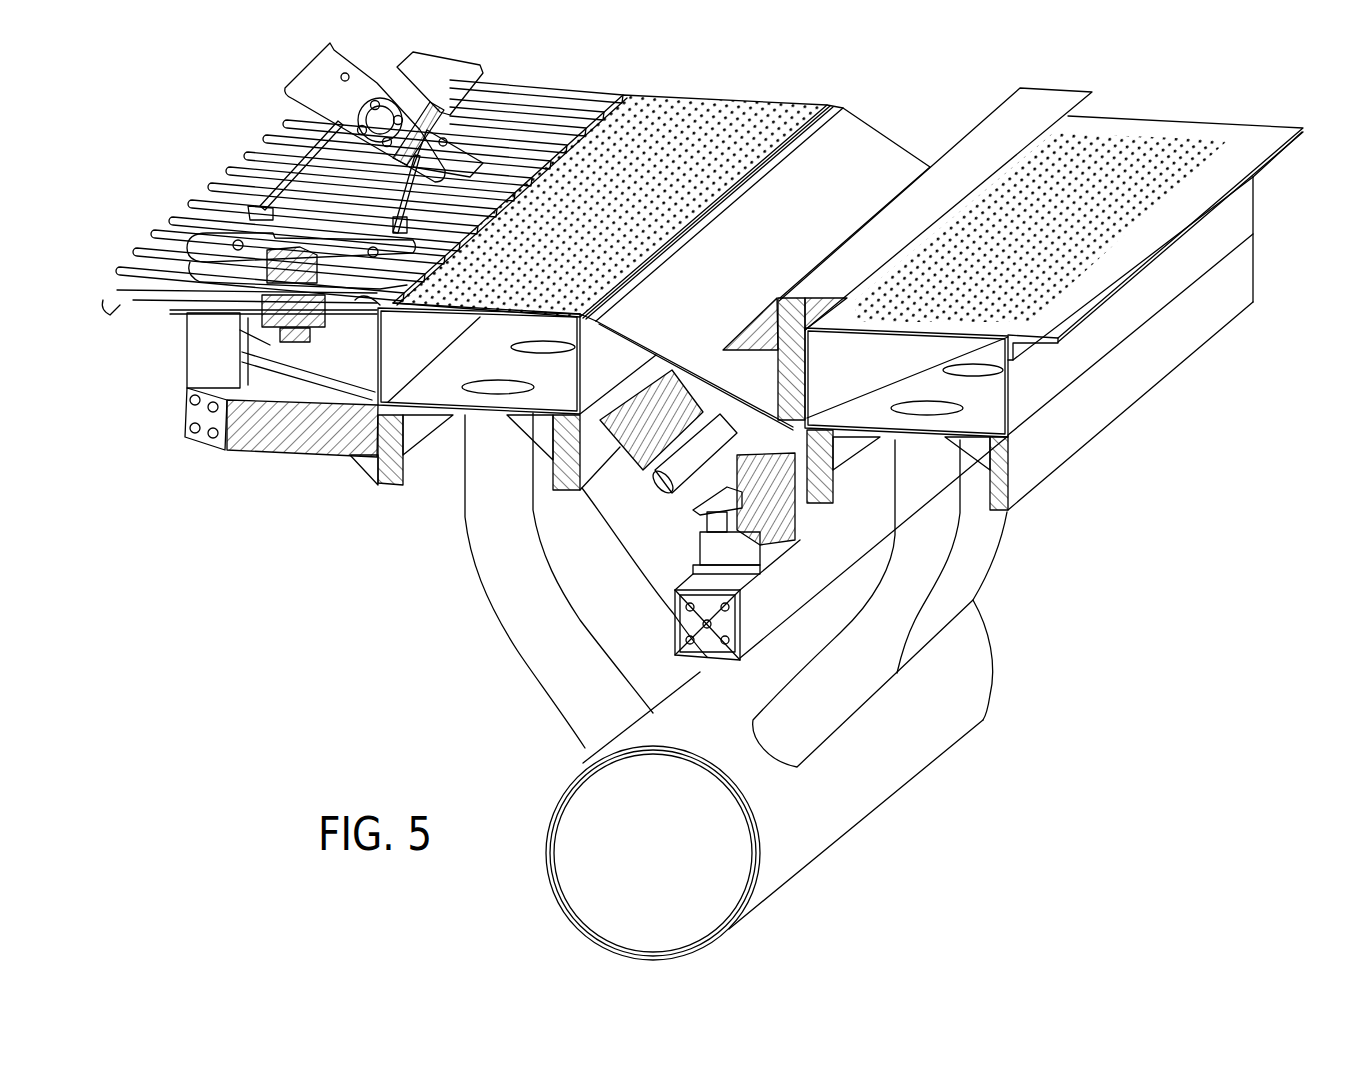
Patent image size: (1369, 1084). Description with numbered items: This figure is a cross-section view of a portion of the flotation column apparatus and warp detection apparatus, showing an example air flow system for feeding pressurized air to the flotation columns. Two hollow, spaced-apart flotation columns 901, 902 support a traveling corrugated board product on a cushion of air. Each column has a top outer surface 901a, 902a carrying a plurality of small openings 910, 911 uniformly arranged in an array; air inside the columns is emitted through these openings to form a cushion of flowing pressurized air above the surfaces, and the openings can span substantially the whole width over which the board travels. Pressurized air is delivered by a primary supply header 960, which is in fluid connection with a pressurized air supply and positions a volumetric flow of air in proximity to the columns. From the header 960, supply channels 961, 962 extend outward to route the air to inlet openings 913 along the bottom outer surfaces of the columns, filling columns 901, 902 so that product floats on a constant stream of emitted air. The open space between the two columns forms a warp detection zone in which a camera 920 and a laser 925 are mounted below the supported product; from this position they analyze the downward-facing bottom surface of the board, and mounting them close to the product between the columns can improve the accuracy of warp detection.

The flotation column 901 is at (988, 343).
The top outer surface 901a is at (1041, 224).
The flotation column 902 is at (503, 399).
The top outer surface 902a is at (486, 288).
The openings 910 is at (1052, 203).
The openings 911 is at (661, 244).
The inlet openings 913 is at (701, 432).
The camera 920 is at (671, 420).
The laser 925 is at (841, 548).
The primary supply header 960 is at (764, 840).
The supply channel 961 is at (910, 603).
The supply channel 962 is at (551, 588).